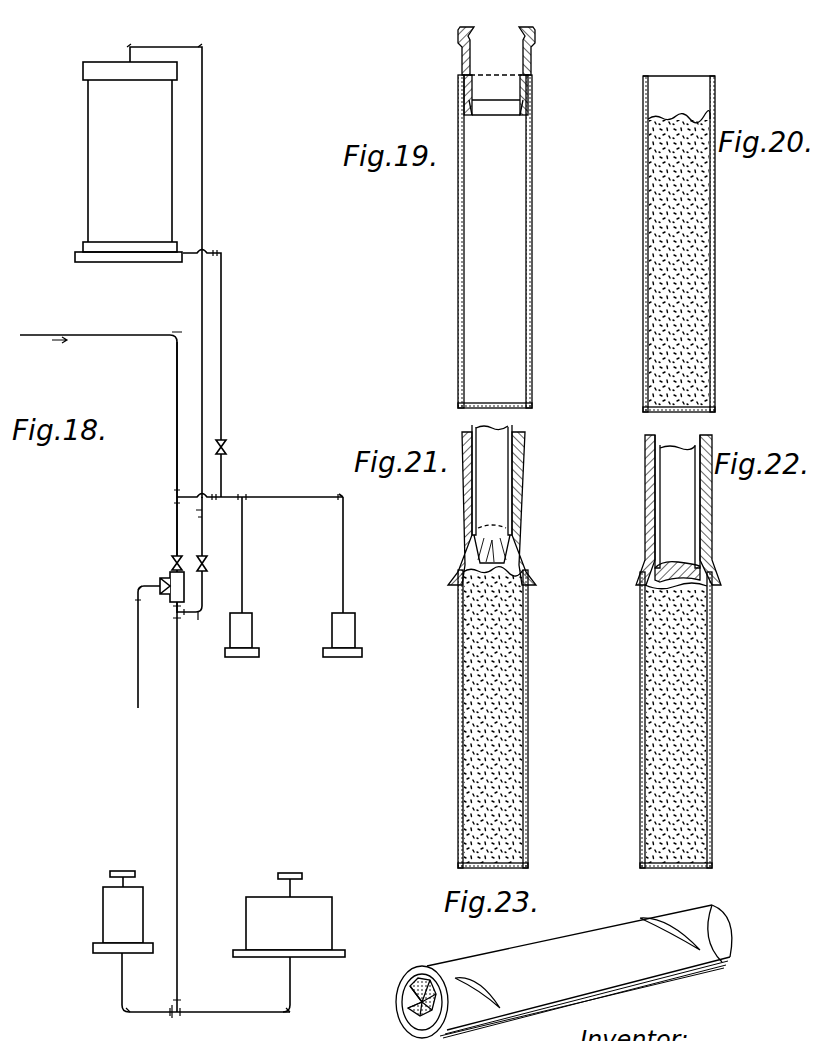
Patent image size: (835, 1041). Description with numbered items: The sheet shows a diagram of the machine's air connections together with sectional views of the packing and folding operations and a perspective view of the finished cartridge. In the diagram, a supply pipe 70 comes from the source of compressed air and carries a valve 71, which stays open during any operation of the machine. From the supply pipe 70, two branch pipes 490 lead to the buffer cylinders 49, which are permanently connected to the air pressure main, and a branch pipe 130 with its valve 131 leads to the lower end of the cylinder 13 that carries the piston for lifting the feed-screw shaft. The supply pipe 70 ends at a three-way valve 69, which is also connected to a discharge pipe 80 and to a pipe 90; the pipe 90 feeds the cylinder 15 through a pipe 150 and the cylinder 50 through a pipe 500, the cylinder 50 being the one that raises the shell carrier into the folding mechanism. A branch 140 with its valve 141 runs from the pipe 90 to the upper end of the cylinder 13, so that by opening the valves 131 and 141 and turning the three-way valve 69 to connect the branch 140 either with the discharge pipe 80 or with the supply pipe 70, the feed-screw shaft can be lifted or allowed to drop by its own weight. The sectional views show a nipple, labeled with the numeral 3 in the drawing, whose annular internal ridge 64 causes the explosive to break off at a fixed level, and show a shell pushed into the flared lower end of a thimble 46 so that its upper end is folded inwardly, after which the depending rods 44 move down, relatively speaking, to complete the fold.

In FIG. 18, the cylinder 13 is at (100, 129).
In FIG. 18, the branch pipe 130 is at (221, 338).
In FIG. 18, the valve 131 is at (236, 448).
In FIG. 18, the supply pipe 70 is at (177, 428).
In FIG. 18, the branch pipe 140 is at (196, 520).
In FIG. 18, the valve 141 is at (217, 566).
In FIG. 18, the valve 71 is at (170, 560).
In FIG. 18, the three-way valve 69 is at (160, 584).
In FIG. 18, the discharge pipe 80 is at (138, 628).
In FIG. 18, the pipe 90 is at (178, 759).
In FIG. 18, the branch pipes 490 is at (242, 547).
In FIG. 18, the buffer cylinders 49 is at (247, 630).
In FIG. 18, the cylinder 15 is at (104, 907).
In FIG. 18, the pipe 150 is at (122, 968).
In FIG. 18, the cylinder 50 is at (320, 914).
In FIG. 18, the pipe 500 is at (290, 980).
In FIG. 19, the annular internal ridge 64 is at (470, 94).
In FIG. 19, the plug 3 is at (535, 63).
In FIG. 21, the thimbles 46 is at (526, 510).
In FIG. 22, the thimbles 46 is at (712, 525).
In FIG. 21, the rods 44 is at (492, 494).
In FIG. 22, the rods 44 is at (677, 508).